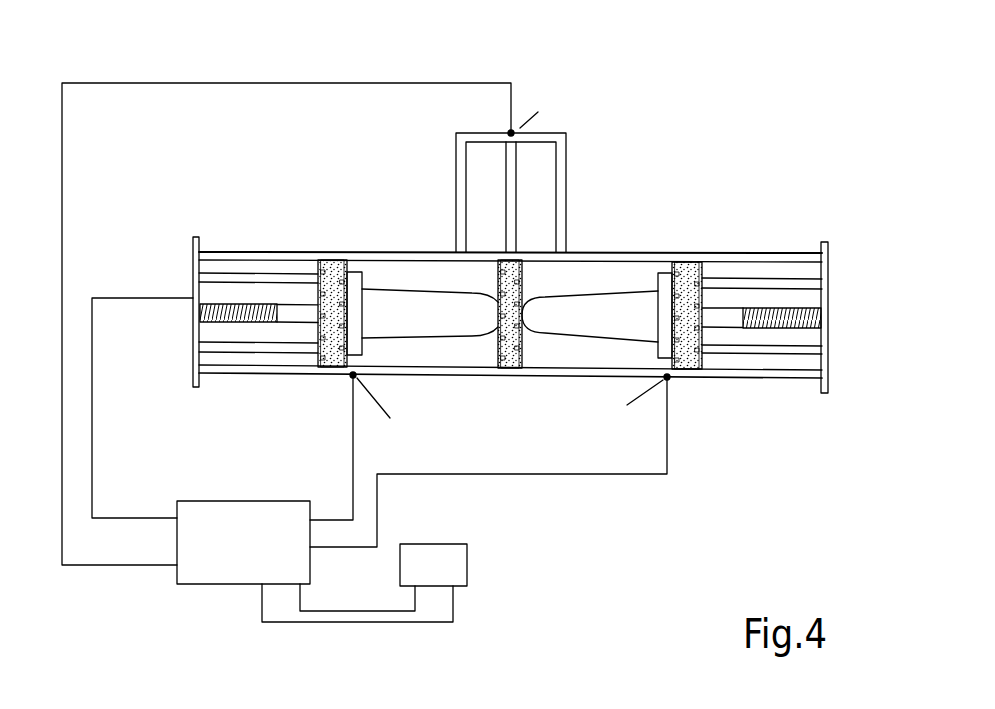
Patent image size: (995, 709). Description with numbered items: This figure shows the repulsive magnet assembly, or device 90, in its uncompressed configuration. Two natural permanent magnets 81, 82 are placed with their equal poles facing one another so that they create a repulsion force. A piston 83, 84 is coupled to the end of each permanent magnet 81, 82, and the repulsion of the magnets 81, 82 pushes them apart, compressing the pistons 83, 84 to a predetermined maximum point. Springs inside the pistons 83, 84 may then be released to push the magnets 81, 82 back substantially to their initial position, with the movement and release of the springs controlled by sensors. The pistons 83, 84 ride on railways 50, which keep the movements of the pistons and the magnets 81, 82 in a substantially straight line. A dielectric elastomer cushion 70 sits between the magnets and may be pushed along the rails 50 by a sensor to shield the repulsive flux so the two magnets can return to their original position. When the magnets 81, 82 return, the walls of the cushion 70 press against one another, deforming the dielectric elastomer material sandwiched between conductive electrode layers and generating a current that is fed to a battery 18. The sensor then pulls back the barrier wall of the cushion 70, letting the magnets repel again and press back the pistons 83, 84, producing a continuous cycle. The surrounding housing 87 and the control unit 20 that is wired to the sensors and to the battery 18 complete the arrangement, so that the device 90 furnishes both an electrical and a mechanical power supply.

The battery 18 is at (448, 562).
The control unit 20 is at (220, 547).
The railways 50 is at (285, 272).
The dielectric elastomer cushion 70 is at (333, 262).
The permanent magnet 81 is at (420, 295).
The permanent magnet 82 is at (607, 312).
The piston 83 is at (277, 304).
The piston 84 is at (746, 308).
The tube housing 87 is at (389, 250).
The device 90 is at (659, 167).